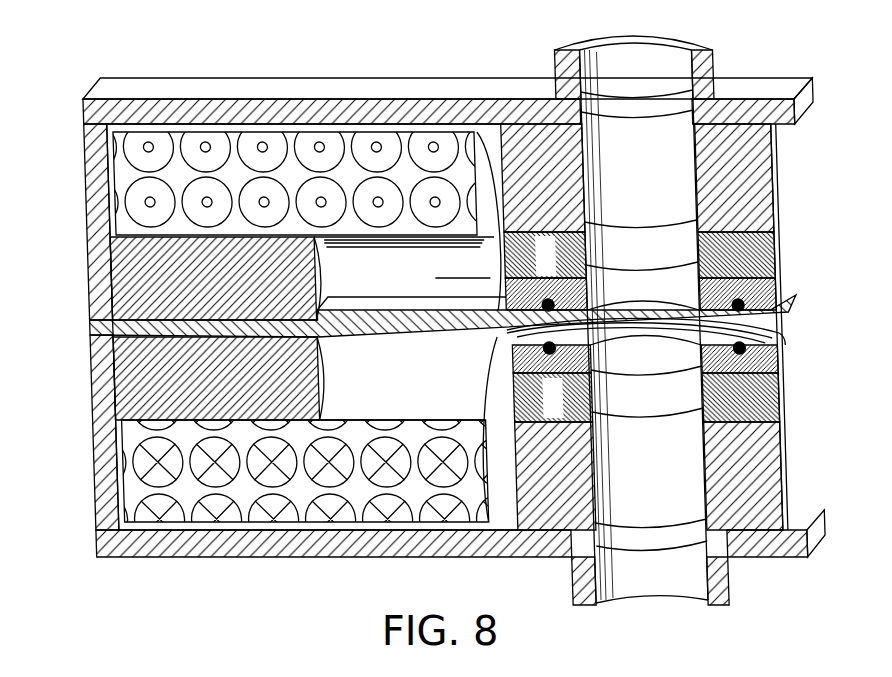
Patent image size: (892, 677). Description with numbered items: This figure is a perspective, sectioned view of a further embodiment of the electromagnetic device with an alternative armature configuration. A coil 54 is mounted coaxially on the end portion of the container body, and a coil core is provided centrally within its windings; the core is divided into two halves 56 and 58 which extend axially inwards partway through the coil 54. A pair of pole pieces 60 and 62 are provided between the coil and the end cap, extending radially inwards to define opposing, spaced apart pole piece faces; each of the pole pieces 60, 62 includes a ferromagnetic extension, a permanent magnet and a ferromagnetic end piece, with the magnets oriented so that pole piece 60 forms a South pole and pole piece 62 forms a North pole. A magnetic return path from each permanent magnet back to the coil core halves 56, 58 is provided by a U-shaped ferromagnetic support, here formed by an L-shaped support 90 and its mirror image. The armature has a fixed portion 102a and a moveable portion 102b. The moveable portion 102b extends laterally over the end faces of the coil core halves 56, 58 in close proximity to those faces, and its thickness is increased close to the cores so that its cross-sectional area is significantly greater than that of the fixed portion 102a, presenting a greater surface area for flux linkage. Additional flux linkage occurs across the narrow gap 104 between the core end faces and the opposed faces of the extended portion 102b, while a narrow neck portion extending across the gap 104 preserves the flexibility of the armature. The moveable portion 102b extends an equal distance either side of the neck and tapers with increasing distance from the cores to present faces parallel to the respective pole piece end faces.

The L-shaped support 90 is at (386, 92).
The coil 54 is at (135, 188).
The coil core half 56 is at (118, 260).
The coil core half 58 is at (120, 376).
The fixed portion of the armature 102a is at (127, 315).
The moveable portion of the armature 102b is at (455, 338).
The gap 104 is at (315, 345).
The pole piece 60 is at (778, 192).
The pole piece 62 is at (779, 459).